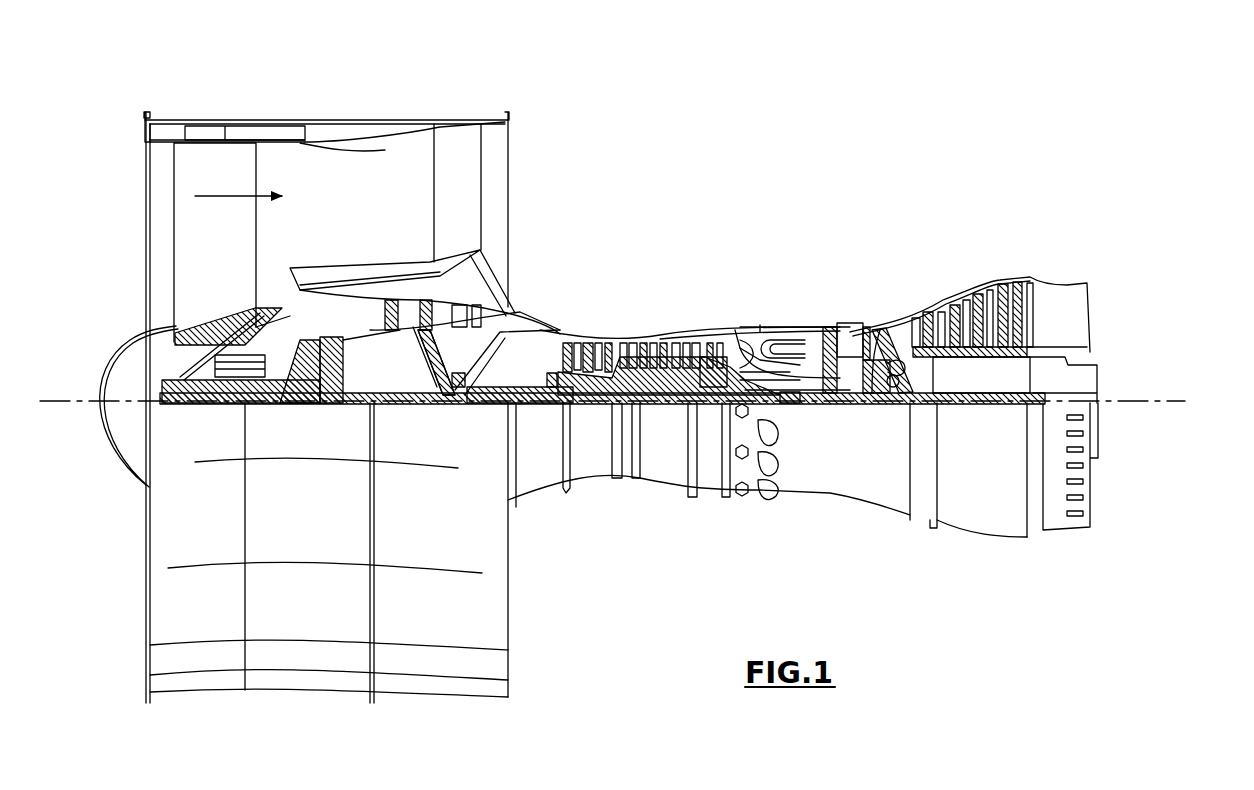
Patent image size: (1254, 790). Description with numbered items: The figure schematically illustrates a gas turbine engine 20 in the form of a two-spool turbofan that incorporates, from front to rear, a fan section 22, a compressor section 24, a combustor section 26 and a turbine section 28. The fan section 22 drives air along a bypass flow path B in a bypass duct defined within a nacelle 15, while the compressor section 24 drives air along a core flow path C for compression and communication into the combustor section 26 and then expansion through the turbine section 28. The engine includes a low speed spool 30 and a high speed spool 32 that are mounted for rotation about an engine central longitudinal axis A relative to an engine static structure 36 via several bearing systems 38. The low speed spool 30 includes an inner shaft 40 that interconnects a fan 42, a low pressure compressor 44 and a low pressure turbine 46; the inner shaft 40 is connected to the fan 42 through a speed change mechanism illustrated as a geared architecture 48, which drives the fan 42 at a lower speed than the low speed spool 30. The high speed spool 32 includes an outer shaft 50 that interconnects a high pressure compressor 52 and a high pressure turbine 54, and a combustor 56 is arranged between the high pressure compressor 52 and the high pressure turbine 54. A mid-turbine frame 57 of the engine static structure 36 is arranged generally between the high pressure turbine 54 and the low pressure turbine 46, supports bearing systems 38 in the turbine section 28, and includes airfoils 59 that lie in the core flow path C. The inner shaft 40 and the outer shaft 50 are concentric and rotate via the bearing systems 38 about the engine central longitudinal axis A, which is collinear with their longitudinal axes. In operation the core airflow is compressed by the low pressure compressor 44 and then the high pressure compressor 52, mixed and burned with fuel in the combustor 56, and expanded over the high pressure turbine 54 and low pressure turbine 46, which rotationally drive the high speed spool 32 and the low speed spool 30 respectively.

The gas turbine engine 20 is at (792, 165).
The fan section 22 is at (255, 110).
The nacelle 15 is at (330, 122).
The fan 42 is at (230, 250).
The low pressure compressor 44 is at (428, 312).
The compressor section 24 is at (561, 308).
The high pressure compressor 52 is at (640, 372).
The high speed spool 32 is at (710, 362).
The combustor section 26 is at (781, 294).
The combustor 56 is at (782, 347).
The high pressure turbine 54 is at (847, 322).
The mid-turbine frame 57 is at (893, 312).
The turbine section 28 is at (930, 262).
The low pressure turbine 46 is at (974, 290).
The airfoils 59 is at (892, 366).
The outer shaft 50 is at (784, 397).
The bearing systems 38 is at (458, 390).
The geared architecture 48 is at (335, 385).
The inner shaft 40 is at (525, 405).
The low speed spool 30 is at (663, 414).
The engine static structure 36 is at (707, 496).
The engine central longitudinal axis A is at (1170, 401).
The bypass flow path B is at (233, 196).
The core flow path C is at (326, 296).